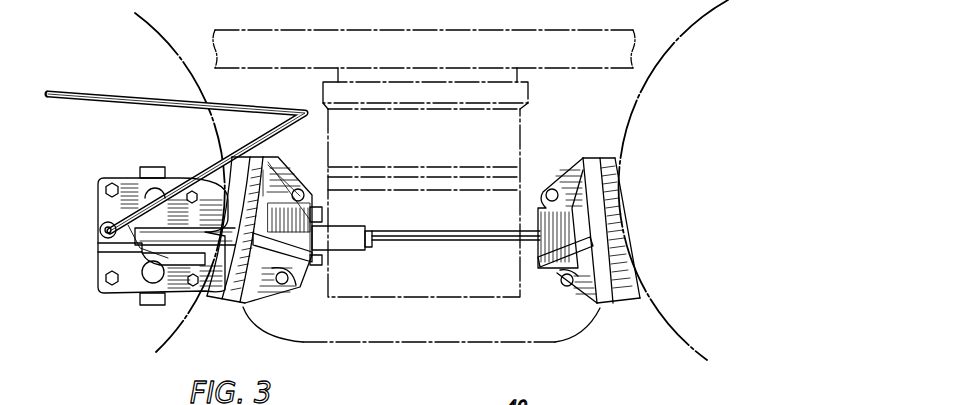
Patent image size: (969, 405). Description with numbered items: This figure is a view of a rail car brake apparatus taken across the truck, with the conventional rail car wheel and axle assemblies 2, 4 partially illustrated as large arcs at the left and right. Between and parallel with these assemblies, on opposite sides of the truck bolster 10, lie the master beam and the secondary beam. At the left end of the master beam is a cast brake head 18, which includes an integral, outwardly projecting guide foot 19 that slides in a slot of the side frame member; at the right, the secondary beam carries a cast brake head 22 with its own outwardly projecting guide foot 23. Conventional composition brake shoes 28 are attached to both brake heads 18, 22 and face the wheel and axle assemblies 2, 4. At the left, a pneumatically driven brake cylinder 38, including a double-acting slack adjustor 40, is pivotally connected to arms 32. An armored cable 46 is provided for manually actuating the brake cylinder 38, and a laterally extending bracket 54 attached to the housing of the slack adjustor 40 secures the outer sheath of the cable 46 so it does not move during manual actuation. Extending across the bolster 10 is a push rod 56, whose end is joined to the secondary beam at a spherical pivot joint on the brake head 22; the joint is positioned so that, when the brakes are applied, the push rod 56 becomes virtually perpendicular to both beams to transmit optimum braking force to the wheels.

The rail car wheel and axle assembly 2 is at (144, 18).
The rail car wheel and axle assembly 4 is at (702, 16).
The truck bolster 10 is at (522, 130).
The brake head 18 is at (310, 188).
The guide foot 19 is at (297, 270).
The brake head 22 is at (539, 215).
The guide foot 23 is at (558, 274).
The composition brake shoe 28 is at (220, 297).
The arm 32 is at (168, 235).
The brake cylinder 38 is at (100, 197).
The double-acting slack adjustor 40 is at (100, 267).
The armored cable 46 is at (127, 101).
The bracket 54 is at (97, 238).
The push rod 56 is at (451, 238).